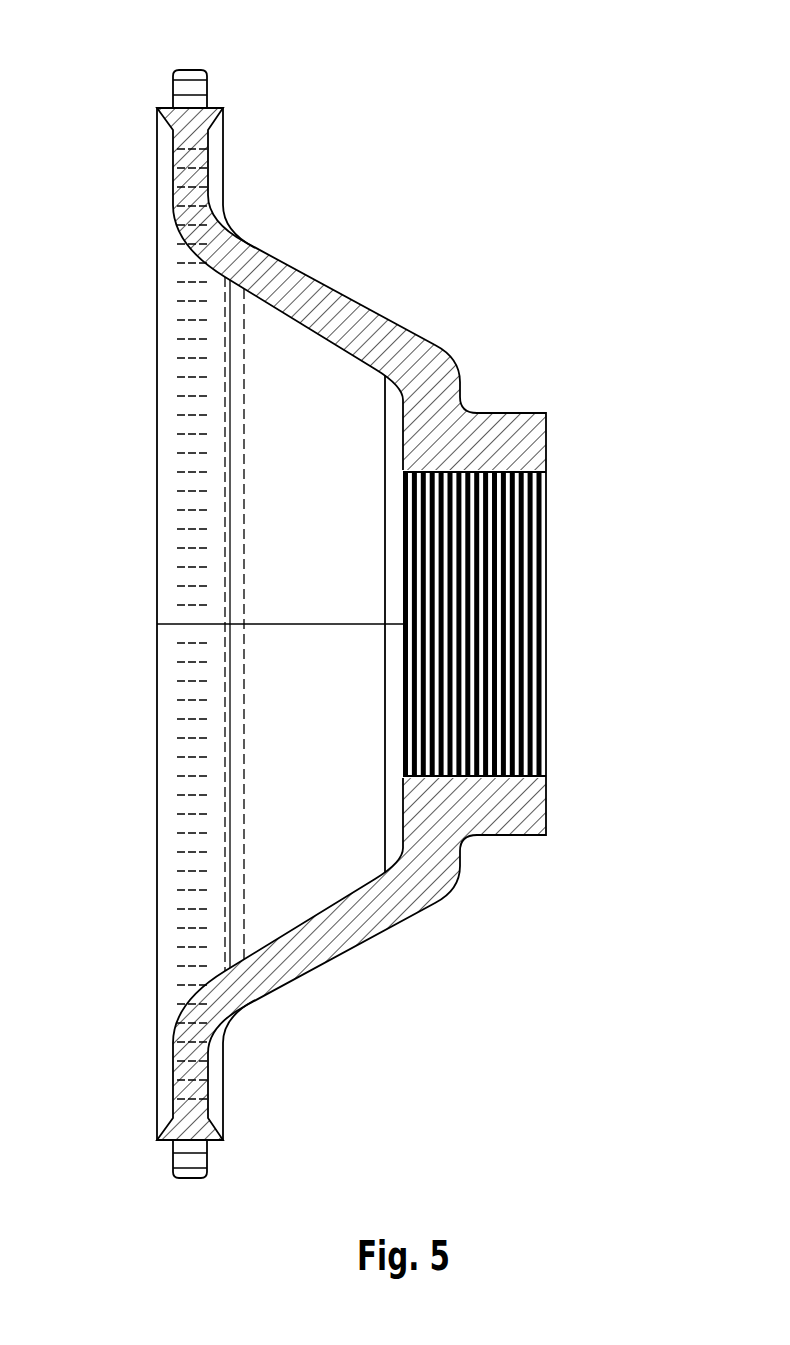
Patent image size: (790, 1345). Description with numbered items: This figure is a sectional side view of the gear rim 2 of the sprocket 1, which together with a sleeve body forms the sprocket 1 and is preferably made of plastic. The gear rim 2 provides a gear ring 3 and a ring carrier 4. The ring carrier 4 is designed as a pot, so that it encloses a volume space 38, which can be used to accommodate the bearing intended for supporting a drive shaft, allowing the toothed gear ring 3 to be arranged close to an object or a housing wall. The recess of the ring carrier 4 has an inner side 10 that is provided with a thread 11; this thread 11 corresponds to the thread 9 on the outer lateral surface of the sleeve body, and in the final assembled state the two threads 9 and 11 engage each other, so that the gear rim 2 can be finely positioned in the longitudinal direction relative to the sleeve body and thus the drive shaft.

The sprocket 1 is at (372, 186).
The gear rim 2 is at (283, 873).
The gear ring 3 is at (208, 112).
The ring carrier 4 is at (402, 352).
The thread 9 is at (507, 750).
The inner side 10 is at (547, 672).
The thread 11 is at (479, 598).
The volume space 38 is at (300, 408).